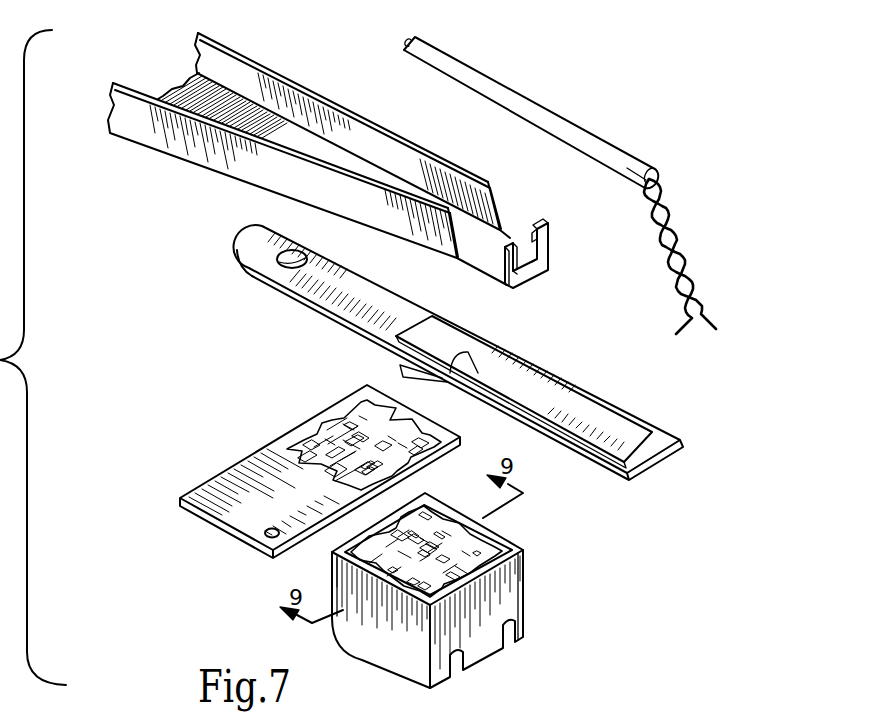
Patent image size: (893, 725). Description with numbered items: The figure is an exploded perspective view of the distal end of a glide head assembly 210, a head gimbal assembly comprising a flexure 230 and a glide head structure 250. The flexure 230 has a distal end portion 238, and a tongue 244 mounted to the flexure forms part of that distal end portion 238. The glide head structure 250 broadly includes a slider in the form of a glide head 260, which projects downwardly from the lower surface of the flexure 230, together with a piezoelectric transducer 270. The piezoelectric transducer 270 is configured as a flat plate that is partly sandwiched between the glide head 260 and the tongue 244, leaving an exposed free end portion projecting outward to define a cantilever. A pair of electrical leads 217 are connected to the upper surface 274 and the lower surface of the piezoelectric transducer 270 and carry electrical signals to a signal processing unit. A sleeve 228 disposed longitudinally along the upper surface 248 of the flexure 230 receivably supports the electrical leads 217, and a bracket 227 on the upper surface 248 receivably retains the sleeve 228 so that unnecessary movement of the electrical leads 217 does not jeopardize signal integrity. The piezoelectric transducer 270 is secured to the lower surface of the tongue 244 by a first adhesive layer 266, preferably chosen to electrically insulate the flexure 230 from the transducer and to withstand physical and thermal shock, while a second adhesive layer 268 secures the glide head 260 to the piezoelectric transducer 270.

The glide head assembly 210 is at (182, 352).
The flexure 230 is at (155, 132).
The upper surface 248 is at (220, 108).
The sleeve 228 is at (557, 123).
The electrical leads 217 is at (688, 236).
The bracket 227 is at (528, 273).
The distal end portion 238 is at (212, 259).
The tongue 244 is at (598, 428).
The upper surface 274 is at (222, 495).
The first adhesive layer 266 is at (340, 418).
The piezoelectric transducer 270 is at (263, 517).
The glide head structure 250 is at (608, 549).
The glide head 260 is at (500, 580).
The second adhesive layer 268 is at (473, 543).